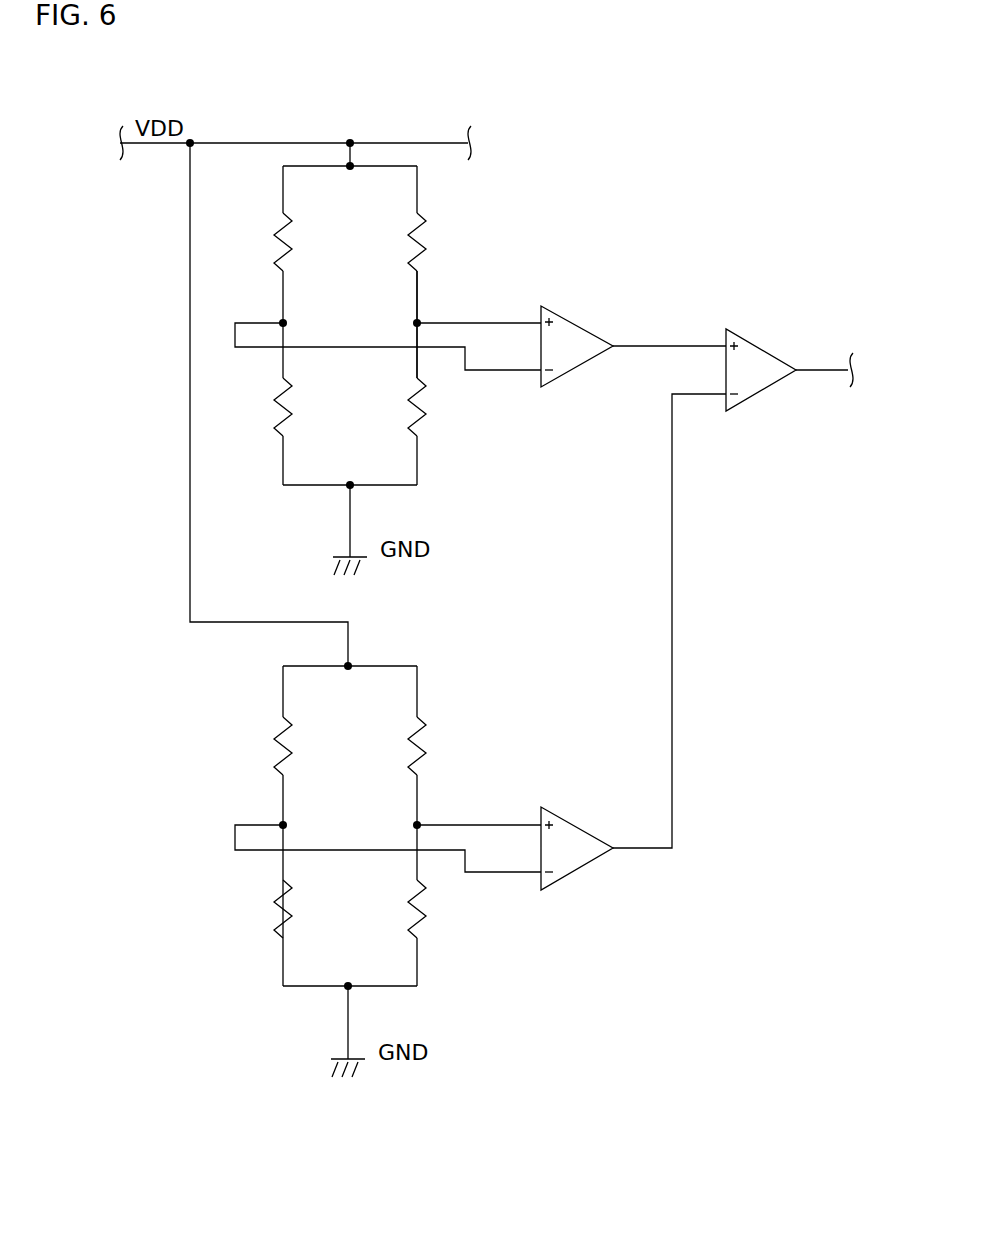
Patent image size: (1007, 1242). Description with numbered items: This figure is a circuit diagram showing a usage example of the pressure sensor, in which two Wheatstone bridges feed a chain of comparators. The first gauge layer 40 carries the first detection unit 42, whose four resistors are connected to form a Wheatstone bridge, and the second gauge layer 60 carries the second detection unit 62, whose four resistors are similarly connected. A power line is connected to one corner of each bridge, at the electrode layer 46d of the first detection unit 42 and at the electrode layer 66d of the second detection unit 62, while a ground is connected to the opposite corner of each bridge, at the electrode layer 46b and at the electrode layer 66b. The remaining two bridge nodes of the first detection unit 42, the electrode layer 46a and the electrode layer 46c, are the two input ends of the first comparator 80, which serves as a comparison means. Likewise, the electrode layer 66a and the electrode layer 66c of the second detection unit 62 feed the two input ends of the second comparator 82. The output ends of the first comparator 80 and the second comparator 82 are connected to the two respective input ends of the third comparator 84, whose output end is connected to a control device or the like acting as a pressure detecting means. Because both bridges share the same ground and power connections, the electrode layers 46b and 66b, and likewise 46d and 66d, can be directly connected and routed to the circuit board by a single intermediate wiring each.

The first gauge layer 40 is at (440, 209).
The first detection unit 42 is at (433, 286).
The electrode layer 46a is at (282, 323).
The electrode layer 46b is at (346, 488).
The electrode layer 46c is at (420, 321).
The electrode layer 46d is at (350, 166).
The second gauge layer 60 is at (246, 890).
The second detection unit 62 is at (237, 926).
The electrode layer 66a is at (281, 825).
The electrode layer 66b is at (345, 989).
The electrode layer 66c is at (420, 823).
The electrode layer 66d is at (349, 668).
The first comparator 80 is at (578, 368).
The second comparator 82 is at (575, 868).
The third comparator 84 is at (762, 347).